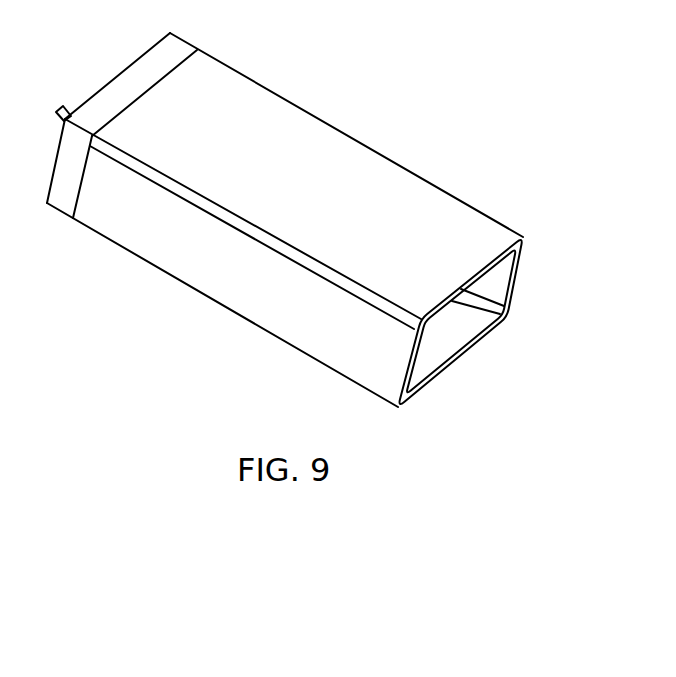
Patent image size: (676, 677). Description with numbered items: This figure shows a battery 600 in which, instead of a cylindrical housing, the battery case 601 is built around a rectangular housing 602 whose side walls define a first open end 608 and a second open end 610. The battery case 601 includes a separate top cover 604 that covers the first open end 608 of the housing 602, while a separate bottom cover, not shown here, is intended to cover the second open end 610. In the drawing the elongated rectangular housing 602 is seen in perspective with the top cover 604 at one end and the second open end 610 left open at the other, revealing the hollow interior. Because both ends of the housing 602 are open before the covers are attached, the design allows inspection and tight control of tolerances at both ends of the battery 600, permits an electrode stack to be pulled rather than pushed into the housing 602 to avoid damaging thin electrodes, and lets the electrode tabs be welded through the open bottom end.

The battery 600 is at (297, 208).
The battery case 601 is at (358, 128).
The rectangular housing 602 is at (431, 190).
The top cover 604 is at (178, 49).
The first open end 608 is at (65, 197).
The second open end 610 is at (471, 368).